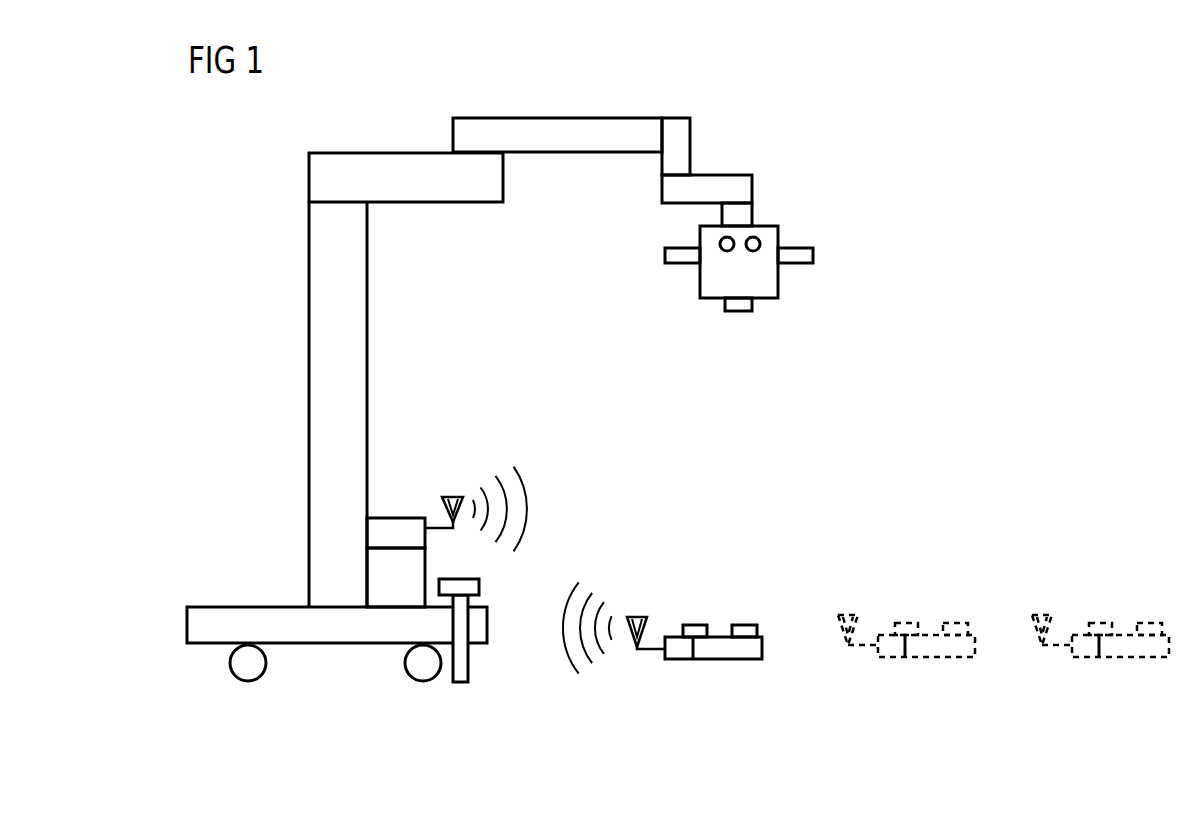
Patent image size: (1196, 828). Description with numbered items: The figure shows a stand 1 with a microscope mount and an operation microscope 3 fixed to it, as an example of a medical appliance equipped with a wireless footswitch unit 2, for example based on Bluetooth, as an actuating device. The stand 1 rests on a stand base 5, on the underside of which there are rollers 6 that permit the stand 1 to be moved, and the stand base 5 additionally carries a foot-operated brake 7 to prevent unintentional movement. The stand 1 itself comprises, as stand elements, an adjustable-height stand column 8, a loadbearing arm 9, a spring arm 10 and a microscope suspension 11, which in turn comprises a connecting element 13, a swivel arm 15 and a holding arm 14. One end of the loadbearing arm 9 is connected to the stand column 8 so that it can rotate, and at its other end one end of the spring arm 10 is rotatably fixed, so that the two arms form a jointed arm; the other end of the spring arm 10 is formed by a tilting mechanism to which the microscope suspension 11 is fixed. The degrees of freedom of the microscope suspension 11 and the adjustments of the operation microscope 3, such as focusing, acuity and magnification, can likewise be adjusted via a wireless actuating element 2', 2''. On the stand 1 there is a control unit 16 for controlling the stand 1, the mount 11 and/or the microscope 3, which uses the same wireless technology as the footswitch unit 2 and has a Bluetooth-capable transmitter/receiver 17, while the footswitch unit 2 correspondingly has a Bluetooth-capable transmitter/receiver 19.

The stand 1 is at (252, 140).
The wireless footswitch unit 2 is at (662, 646).
The wireless actuating element 2' is at (906, 661).
The wireless actuating element 2'' is at (1100, 661).
The microscope 3 is at (780, 277).
The stand base 5 is at (227, 620).
The rollers 6 is at (237, 661).
The foot-operated brake 7 is at (473, 587).
The adjustable-height stand column 8 is at (318, 393).
The loadbearing arm 9 is at (358, 163).
The spring arm 10 is at (557, 125).
The microscope suspension 11 is at (634, 210).
The connecting element 13 is at (683, 134).
The holding arm 14 is at (742, 212).
The swivel arm 15 is at (735, 185).
The control unit 16 is at (413, 573).
The transmitter/receiver 17 is at (395, 525).
The transmitter/receiver 19 is at (680, 660).